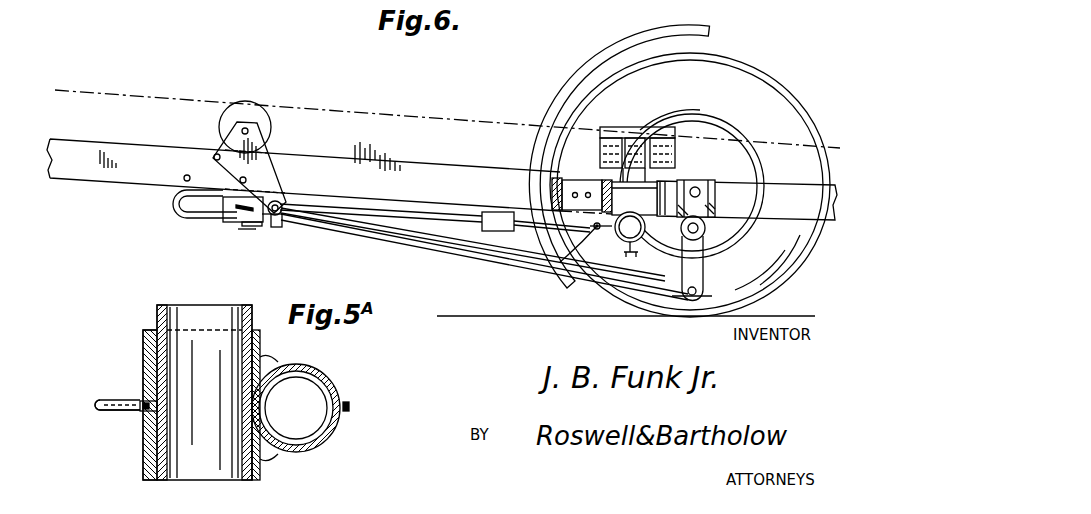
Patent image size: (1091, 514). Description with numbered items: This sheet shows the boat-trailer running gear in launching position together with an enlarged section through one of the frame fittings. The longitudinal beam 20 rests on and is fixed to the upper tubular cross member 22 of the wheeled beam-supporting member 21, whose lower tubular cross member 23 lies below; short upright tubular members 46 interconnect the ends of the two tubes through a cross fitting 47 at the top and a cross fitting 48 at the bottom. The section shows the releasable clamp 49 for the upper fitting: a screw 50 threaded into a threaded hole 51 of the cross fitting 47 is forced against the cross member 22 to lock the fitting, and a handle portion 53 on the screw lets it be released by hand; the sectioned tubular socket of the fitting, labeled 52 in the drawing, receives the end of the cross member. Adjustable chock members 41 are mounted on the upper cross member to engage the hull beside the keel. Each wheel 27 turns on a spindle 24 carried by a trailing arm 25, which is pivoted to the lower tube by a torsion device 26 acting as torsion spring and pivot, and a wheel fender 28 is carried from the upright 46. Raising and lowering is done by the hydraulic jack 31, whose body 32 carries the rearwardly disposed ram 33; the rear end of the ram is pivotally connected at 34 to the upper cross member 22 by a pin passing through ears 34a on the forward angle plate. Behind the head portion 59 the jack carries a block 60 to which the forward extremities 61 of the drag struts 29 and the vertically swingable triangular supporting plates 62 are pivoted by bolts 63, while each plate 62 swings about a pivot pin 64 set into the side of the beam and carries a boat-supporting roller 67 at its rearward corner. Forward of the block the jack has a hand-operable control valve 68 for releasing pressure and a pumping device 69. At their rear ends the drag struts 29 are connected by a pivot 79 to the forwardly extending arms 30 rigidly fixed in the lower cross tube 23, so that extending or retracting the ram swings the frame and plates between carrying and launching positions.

In FIG. 6, the longitudinal beam 20 is at (378, 163).
In FIG. 6, the wheeled beam-supporting member 21 is at (728, 204).
In FIG. 6, the upper tubular cross member 22 is at (618, 240).
In FIG. 5A, the upper tubular cross member 22 is at (157, 314).
In FIG. 6, the lower tubular cross member 23 is at (702, 235).
In FIG. 6, the wheel spindle 24 is at (705, 176).
In FIG. 6, the trailing arm 25 is at (700, 189).
In FIG. 6, the torsion device 26 is at (700, 270).
In FIG. 6, the wheel 27 is at (770, 90).
In FIG. 6, the wheel fender 28 is at (620, 52).
In FIG. 6, the drag strut 29 is at (470, 249).
In FIG. 6, the forwardly extending arm 30 is at (686, 280).
In FIG. 6, the hydraulic jack 31 is at (426, 202).
In FIG. 6, the jack body 32 is at (378, 216).
In FIG. 6, the ram 33 is at (524, 216).
In FIG. 6, the pivotal connection 34 is at (595, 225).
In FIG. 6, the ears 34a is at (560, 262).
In FIG. 6, the chock member 41 is at (627, 126).
In FIG. 6, the upright tubular member 46 is at (682, 178).
In FIG. 5A, the upright tubular member 46 is at (318, 391).
In FIG. 6, the cross fitting 47 is at (620, 182).
In FIG. 5A, the cross fitting 47 is at (148, 357).
In FIG. 6, the cross fitting 48 is at (713, 184).
In FIG. 6, the releasable clamp 49 is at (634, 265).
In FIG. 5A, the releasable clamp 49 is at (113, 421).
In FIG. 5A, the screw 50 is at (141, 412).
In FIG. 5A, the threaded hole 51 is at (142, 383).
In FIG. 5A, the bore 52 is at (204, 392).
In FIG. 5A, the handle portion 53 is at (106, 397).
In FIG. 6, the head portion 59 is at (194, 213).
In FIG. 6, the block 60 is at (279, 227).
In FIG. 6, the forward extremity 61 is at (267, 226).
In FIG. 6, the supporting plate 62 is at (270, 172).
In FIG. 6, the bolt 63 is at (283, 203).
In FIG. 6, the pivot pin 64 is at (213, 152).
In FIG. 6, the boat-supporting roller 67 is at (252, 114).
In FIG. 6, the hand-operable control valve 68 is at (246, 228).
In FIG. 6, the pumping device 69 is at (238, 196).
In FIG. 6, the pivot 79 is at (693, 296).